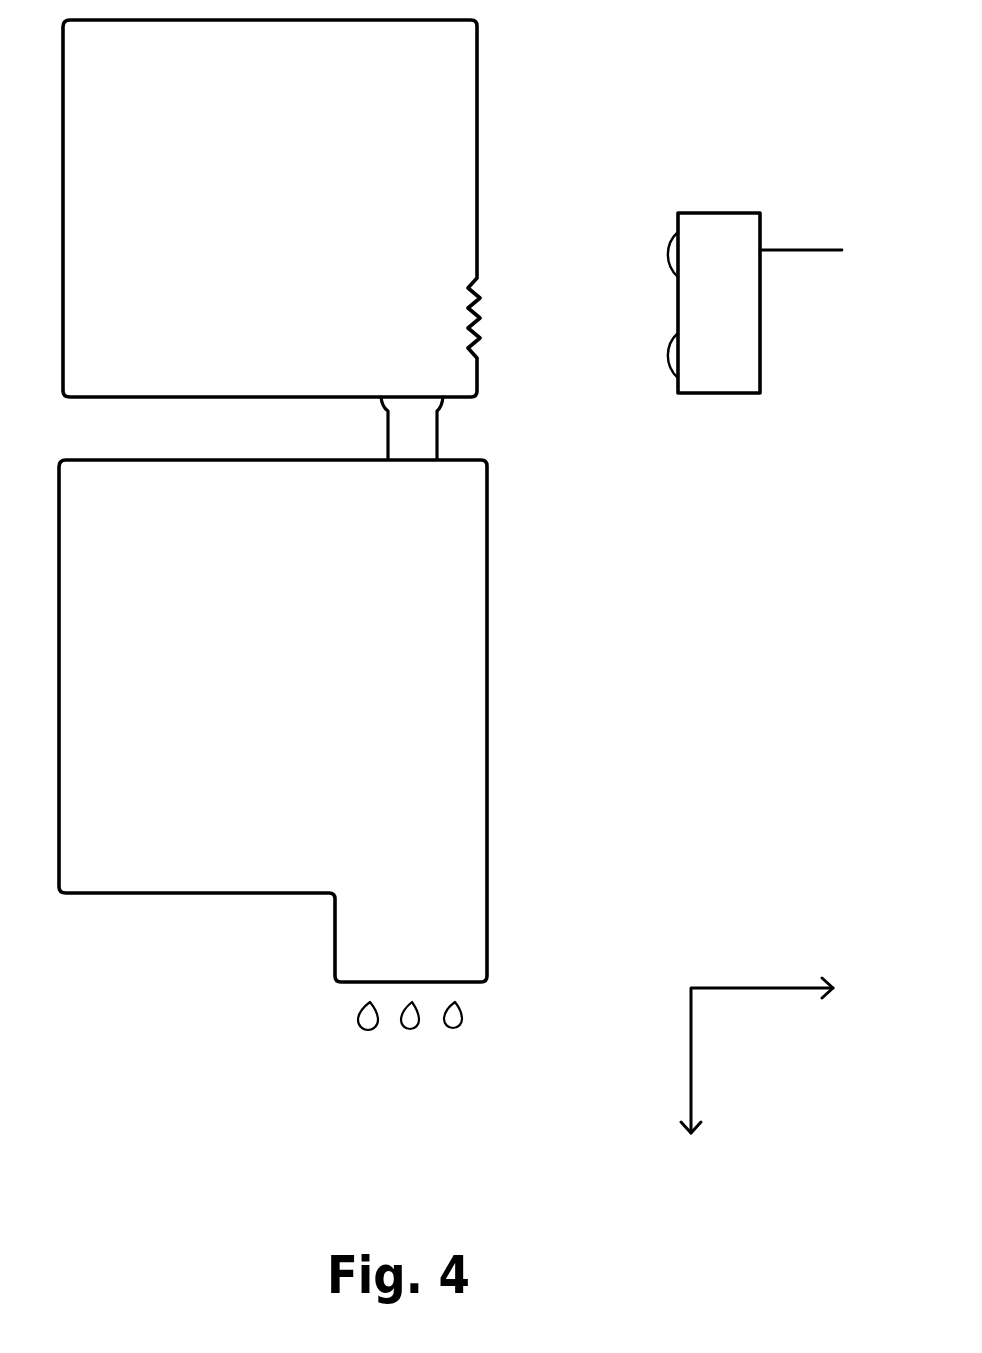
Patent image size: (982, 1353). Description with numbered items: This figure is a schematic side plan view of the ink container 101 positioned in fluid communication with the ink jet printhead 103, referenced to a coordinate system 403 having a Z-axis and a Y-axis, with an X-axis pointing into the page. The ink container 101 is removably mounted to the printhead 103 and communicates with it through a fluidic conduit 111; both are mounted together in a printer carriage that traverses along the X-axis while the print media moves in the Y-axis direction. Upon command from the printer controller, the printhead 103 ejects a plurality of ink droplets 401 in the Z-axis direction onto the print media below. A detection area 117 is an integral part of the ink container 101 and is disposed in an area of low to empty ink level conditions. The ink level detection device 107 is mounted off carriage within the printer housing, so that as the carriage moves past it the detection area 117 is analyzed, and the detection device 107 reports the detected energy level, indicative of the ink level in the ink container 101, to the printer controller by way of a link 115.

The ink container 101 is at (246, 200).
The printhead 103 is at (292, 674).
The ink level detection device 107 is at (739, 301).
The fluidic conduit 111 is at (417, 435).
The link 115 is at (813, 249).
The detection area 117 is at (496, 336).
The ink droplets 401 is at (359, 1023).
The coordinate system 403 is at (722, 988).